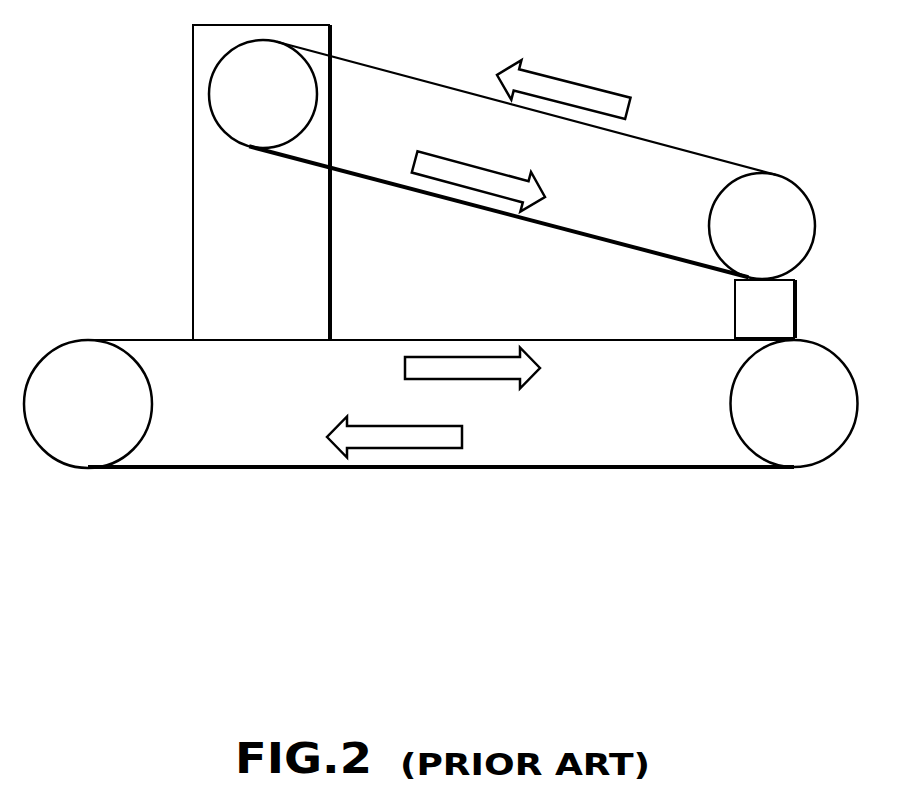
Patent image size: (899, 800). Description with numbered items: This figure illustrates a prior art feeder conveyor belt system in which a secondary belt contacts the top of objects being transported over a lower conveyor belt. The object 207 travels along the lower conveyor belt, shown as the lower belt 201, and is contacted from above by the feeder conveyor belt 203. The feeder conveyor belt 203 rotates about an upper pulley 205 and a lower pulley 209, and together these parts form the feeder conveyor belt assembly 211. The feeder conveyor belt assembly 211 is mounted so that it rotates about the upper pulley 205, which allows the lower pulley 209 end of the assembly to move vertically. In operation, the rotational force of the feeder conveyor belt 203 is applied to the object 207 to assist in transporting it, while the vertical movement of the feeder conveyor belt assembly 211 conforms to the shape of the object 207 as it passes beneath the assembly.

The lower conveyor belt 201 is at (400, 338).
The feeder conveyor belt 203 is at (681, 148).
The upper pulley 205 is at (222, 80).
The object 207 is at (788, 308).
The lower pulley 209 is at (803, 213).
The feeder conveyor belt assembly 211 is at (577, 85).